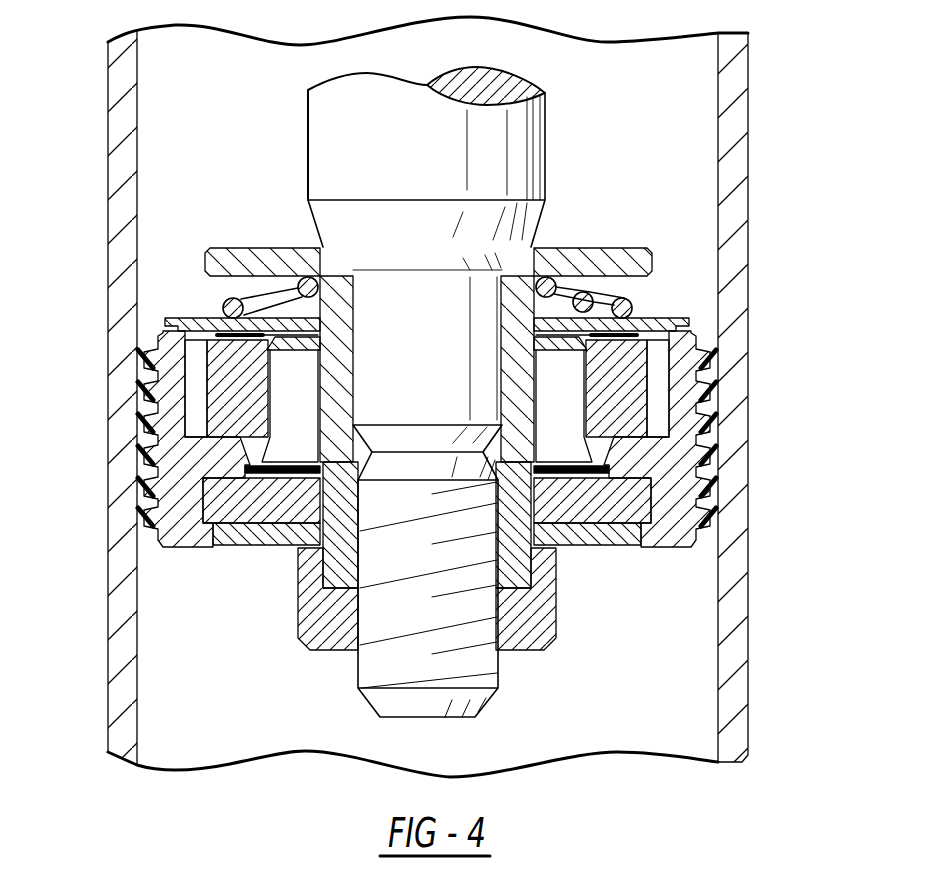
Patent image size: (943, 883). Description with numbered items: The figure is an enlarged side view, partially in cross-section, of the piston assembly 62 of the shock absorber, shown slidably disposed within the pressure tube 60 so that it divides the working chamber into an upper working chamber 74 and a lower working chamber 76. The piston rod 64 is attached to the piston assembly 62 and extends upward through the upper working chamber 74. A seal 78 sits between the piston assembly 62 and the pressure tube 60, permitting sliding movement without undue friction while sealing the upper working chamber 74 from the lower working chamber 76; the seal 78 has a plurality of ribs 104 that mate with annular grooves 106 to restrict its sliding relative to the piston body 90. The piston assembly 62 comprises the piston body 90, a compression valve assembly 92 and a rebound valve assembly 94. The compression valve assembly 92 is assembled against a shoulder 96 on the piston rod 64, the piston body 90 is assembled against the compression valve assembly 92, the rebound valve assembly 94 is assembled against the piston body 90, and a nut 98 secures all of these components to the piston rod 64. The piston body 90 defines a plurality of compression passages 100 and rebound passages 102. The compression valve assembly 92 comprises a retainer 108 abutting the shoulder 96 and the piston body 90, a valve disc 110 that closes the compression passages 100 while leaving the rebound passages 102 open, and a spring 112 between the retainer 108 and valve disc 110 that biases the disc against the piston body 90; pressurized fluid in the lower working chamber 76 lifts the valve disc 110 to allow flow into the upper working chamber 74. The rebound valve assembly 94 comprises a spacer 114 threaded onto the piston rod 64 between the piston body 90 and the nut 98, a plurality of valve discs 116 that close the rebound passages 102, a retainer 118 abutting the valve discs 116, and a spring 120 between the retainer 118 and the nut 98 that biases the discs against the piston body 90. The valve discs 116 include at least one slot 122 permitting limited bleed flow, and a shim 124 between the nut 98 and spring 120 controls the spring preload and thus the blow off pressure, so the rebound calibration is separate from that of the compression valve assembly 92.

The pressure tube 60 is at (732, 105).
The piston assembly 62 is at (259, 647).
The piston rod 64 is at (394, 158).
The upper working chamber 74 is at (672, 102).
The lower working chamber 76 is at (626, 636).
The seal 78 is at (697, 522).
The piston body 90 is at (682, 380).
The compression valve assembly 92 is at (682, 255).
The rebound valve assembly 94 is at (262, 557).
The shoulder 96 is at (340, 252).
The nut 98 is at (522, 638).
The compression passages 100 is at (660, 362).
The rebound passages 102 is at (292, 385).
The ribs 104 is at (145, 486).
The annular grooves 106 is at (150, 421).
The retainer 108 is at (548, 262).
The valve disc 110 is at (690, 320).
The spring 112 is at (634, 314).
The spacer 114 is at (523, 505).
The valve discs 116 is at (245, 470).
The retainer 118 is at (217, 515).
The spring 120 is at (222, 540).
The slot 122 is at (607, 470).
The shim 124 is at (557, 550).